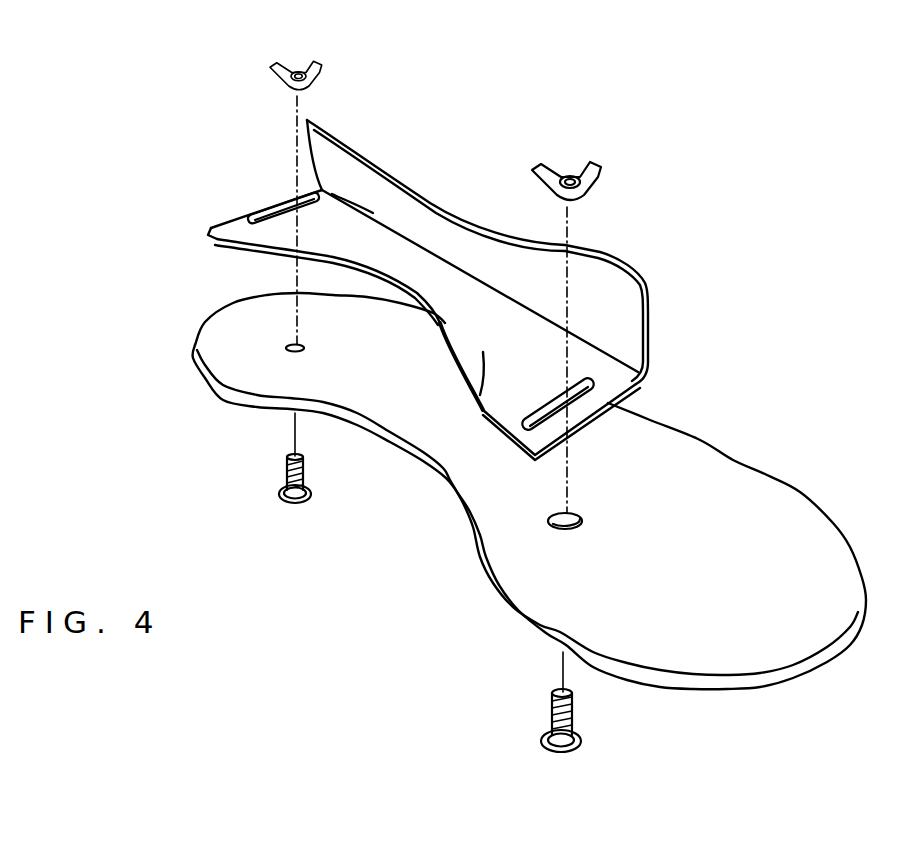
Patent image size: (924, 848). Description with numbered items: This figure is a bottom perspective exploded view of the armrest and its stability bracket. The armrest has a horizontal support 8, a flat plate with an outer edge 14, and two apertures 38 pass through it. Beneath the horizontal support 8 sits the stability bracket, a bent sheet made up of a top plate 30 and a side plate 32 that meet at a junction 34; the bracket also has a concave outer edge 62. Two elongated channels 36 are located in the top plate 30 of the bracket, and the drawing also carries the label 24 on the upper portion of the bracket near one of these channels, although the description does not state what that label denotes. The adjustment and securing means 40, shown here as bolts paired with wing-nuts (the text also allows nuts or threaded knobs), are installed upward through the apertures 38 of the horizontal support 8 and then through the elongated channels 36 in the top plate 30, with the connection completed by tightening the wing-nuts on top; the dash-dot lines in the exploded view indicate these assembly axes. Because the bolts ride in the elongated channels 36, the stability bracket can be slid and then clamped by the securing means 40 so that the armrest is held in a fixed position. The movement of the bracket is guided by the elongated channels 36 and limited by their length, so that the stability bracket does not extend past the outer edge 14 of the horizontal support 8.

The horizontal support 8 is at (657, 457).
The outer edge 14 is at (476, 397).
The upper flange 24 is at (308, 188).
The top plate 30 is at (393, 437).
The side plate 32 is at (425, 220).
The junction 34 is at (593, 353).
The elongated channels 36 is at (248, 224).
The apertures 38 is at (287, 351).
The adjustment and securing means 40 is at (332, 69).
The concave outer edge 62 is at (343, 258).